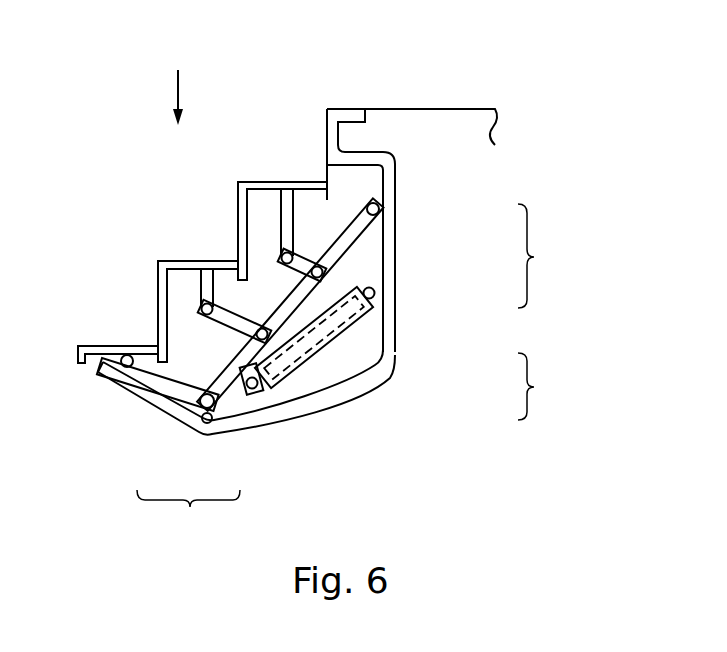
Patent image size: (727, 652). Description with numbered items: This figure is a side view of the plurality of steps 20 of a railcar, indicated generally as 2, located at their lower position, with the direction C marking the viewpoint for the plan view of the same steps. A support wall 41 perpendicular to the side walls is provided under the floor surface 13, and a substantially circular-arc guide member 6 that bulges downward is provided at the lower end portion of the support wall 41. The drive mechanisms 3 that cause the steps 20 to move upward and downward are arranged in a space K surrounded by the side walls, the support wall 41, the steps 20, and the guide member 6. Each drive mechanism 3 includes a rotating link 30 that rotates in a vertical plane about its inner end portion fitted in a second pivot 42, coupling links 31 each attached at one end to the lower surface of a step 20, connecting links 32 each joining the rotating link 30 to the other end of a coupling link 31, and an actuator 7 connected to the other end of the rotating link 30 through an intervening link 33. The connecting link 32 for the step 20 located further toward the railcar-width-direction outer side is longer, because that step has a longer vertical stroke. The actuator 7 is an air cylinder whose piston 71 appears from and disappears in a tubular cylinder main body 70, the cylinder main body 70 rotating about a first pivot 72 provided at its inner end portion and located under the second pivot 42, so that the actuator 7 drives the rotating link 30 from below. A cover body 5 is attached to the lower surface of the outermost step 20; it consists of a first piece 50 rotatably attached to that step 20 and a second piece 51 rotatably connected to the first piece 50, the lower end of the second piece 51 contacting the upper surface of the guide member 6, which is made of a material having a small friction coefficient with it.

The seat device 2 is at (560, 193).
The drive mechanism 3 is at (538, 256).
The cover body 5 is at (188, 519).
The guide member 6 is at (310, 411).
The actuator 7 is at (538, 386).
The floor surface 13 is at (455, 108).
The step 20 is at (267, 183).
The rotating link 30 is at (288, 227).
The coupling link 31 is at (213, 288).
The connecting link 32 is at (232, 323).
The intervening link 33 is at (245, 390).
The support wall 41 is at (398, 176).
The second pivot 42 is at (373, 203).
The first piece 50 is at (185, 423).
The second piece 51 is at (233, 422).
The cylinder main body 70 is at (370, 326).
The piston 71 is at (345, 338).
The first pivot 72 is at (375, 296).
The space K is at (352, 185).
The direction C is at (178, 81).